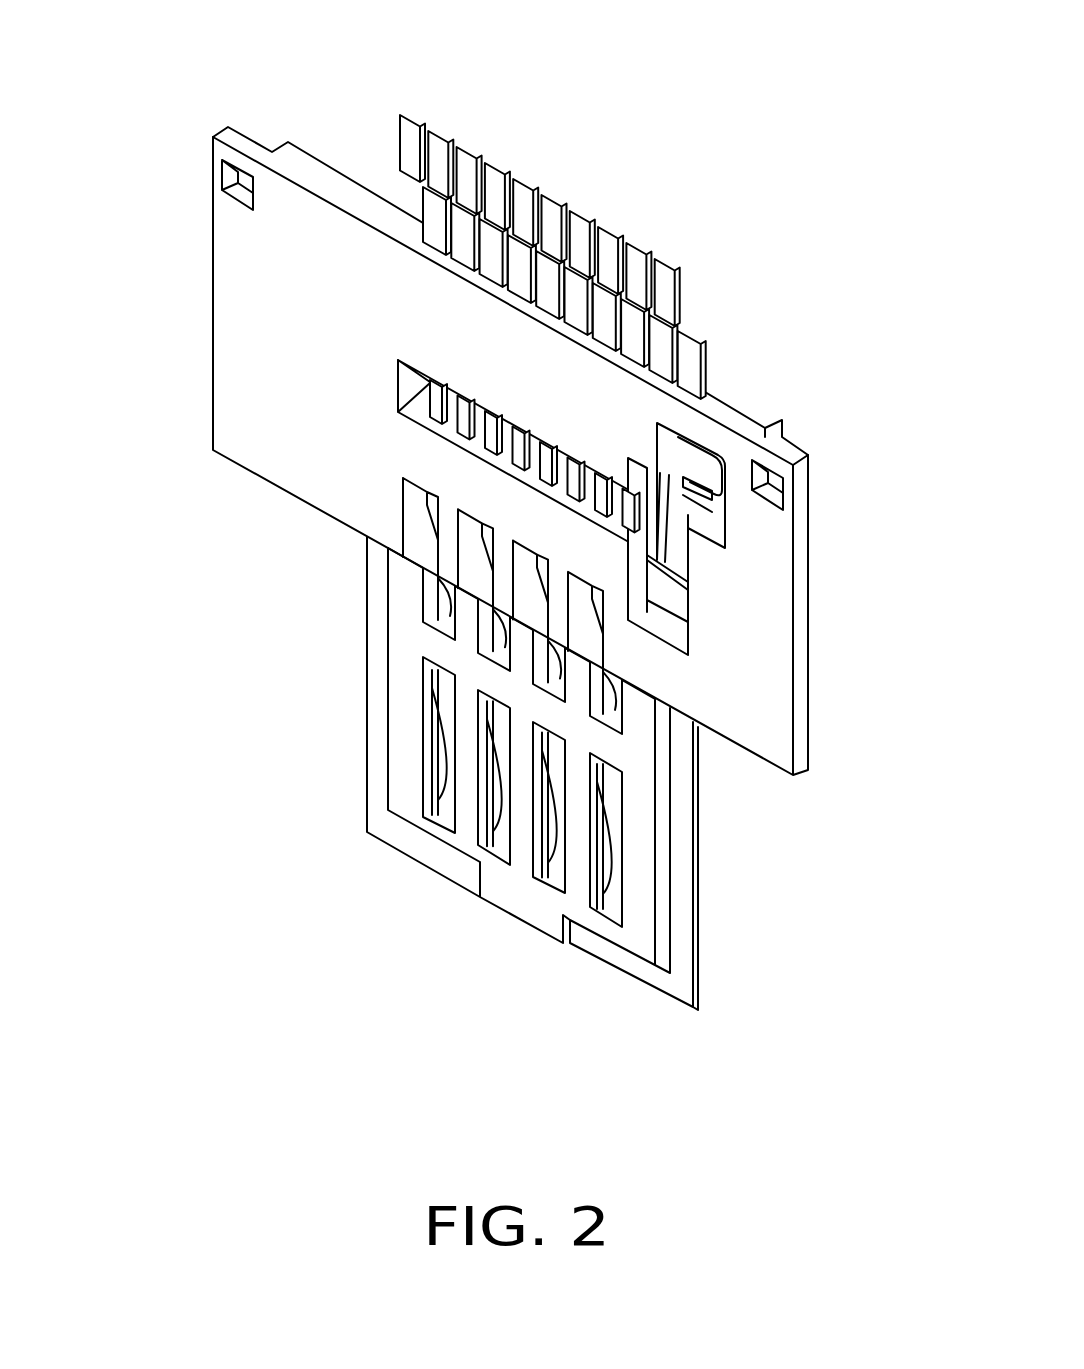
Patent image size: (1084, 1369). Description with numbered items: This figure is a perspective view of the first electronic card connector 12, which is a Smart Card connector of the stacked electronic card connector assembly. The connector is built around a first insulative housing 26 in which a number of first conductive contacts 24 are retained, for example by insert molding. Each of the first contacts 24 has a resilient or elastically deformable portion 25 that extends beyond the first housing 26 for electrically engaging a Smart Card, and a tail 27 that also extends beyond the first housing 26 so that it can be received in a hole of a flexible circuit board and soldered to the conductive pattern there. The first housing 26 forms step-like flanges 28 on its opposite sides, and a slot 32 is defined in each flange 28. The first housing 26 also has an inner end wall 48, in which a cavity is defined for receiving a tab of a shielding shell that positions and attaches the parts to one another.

The first electronic card connector 12 is at (585, 66).
The first conductive contacts 24 is at (703, 329).
The resilient or elastically deformable portions 25 is at (445, 796).
The first insulative housing 26 is at (776, 774).
The tails 27 is at (676, 269).
The step-like flanges 28 is at (241, 143).
The slot 32 is at (229, 183).
The inner end wall 48 is at (620, 975).